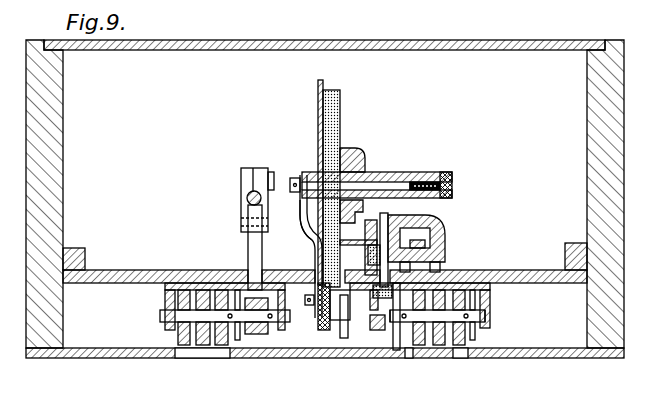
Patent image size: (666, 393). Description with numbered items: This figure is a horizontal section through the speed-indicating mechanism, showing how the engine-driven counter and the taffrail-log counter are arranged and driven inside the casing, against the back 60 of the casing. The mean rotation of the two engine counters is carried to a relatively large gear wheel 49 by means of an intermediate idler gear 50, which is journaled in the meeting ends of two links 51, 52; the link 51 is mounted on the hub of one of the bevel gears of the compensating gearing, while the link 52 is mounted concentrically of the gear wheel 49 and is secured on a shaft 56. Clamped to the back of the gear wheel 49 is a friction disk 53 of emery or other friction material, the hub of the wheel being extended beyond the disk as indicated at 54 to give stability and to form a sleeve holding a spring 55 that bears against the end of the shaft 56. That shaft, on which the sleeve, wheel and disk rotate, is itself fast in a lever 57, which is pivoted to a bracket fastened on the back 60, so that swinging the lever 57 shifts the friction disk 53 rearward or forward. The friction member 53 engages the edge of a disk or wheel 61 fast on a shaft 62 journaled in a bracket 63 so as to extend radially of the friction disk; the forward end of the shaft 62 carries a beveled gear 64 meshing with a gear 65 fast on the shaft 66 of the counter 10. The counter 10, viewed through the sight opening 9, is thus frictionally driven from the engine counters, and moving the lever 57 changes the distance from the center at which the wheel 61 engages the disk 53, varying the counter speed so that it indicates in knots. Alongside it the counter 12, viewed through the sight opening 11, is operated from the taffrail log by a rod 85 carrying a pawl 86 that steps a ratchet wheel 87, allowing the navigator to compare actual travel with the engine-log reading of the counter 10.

The sight opening 9 is at (455, 348).
The counter 10 is at (478, 340).
The sight opening 11 is at (210, 350).
The counter 12 is at (178, 336).
The gear wheel 49 is at (318, 122).
The idler gear 50 is at (326, 332).
The link 51 is at (352, 320).
The link 52 is at (300, 228).
The friction disk 53 is at (340, 130).
The extended hub 54 is at (385, 175).
The spring 55 is at (440, 175).
The shaft 56 is at (408, 182).
The lever 57 is at (302, 175).
The back of the casing 60 is at (538, 50).
The disk or wheel 61 is at (445, 232).
The shaft 62 is at (390, 235).
The bracket 63 is at (447, 242).
The beveled gear 64 is at (445, 264).
The gear 65 is at (400, 345).
The shaft 66 is at (473, 313).
The rod 85 is at (241, 198).
The pawl 86 is at (248, 250).
The ratchet wheel 87 is at (270, 337).